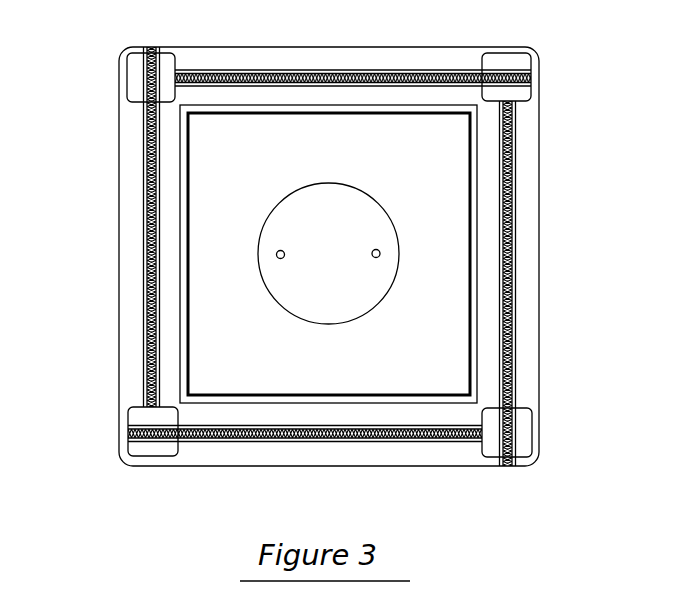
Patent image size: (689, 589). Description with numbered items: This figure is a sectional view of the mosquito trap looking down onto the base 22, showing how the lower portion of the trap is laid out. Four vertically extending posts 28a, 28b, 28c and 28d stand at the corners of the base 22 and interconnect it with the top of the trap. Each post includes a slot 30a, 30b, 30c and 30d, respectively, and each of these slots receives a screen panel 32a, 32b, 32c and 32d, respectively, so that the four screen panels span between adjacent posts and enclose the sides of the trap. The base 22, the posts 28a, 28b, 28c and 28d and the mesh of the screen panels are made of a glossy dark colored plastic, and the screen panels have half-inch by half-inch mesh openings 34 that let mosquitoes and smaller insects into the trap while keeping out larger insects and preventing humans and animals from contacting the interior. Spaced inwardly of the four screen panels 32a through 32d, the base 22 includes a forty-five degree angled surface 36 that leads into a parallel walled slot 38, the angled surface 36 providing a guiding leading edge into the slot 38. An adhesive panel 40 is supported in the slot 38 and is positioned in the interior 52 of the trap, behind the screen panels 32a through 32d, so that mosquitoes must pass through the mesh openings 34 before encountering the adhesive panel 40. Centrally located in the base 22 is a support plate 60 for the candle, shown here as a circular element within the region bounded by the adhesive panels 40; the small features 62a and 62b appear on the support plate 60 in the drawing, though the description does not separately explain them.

The base 22 is at (133, 315).
The post 28a is at (140, 448).
The post 28b is at (522, 445).
The post 28c is at (503, 62).
The post 28d is at (167, 62).
The slot 30a is at (420, 438).
The slot 30b is at (512, 350).
The slot 30c is at (330, 63).
The slot 30d is at (148, 53).
The screen panel 32a is at (323, 433).
The screen panel 32b is at (512, 248).
The screen panel 32c is at (405, 74).
The screen panel 32d is at (148, 202).
The mesh openings 34 is at (148, 260).
The angled surface 36 is at (182, 133).
The parallel walled slot 38 is at (186, 155).
The adhesive panel 40 is at (403, 115).
The interior 52 is at (225, 98).
The support plate 60 is at (330, 213).
The pin hole 62a is at (277, 258).
The pin hole 62b is at (380, 249).